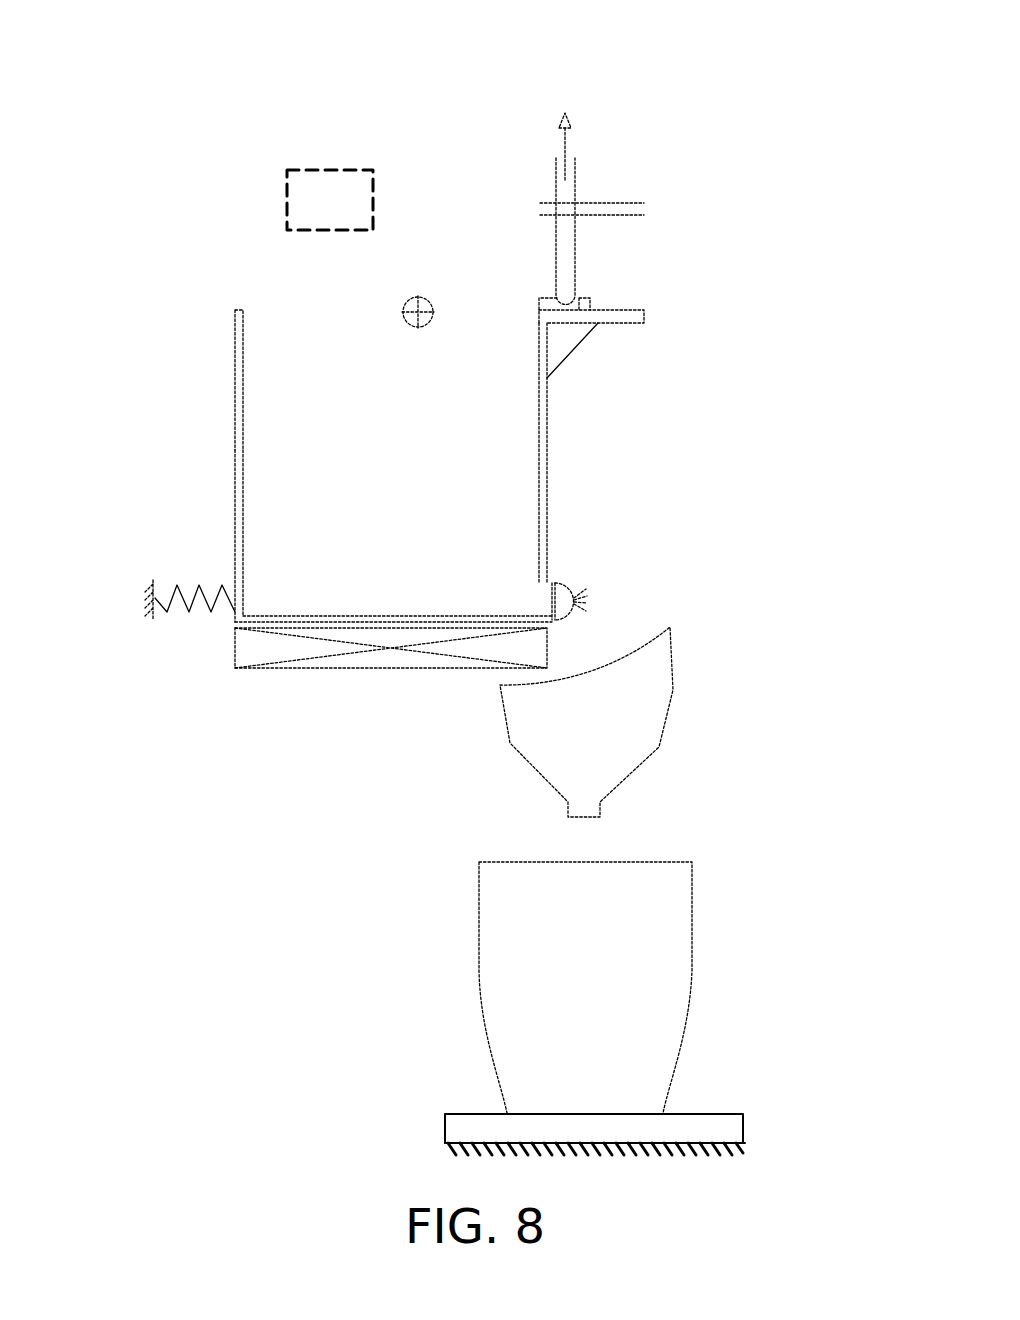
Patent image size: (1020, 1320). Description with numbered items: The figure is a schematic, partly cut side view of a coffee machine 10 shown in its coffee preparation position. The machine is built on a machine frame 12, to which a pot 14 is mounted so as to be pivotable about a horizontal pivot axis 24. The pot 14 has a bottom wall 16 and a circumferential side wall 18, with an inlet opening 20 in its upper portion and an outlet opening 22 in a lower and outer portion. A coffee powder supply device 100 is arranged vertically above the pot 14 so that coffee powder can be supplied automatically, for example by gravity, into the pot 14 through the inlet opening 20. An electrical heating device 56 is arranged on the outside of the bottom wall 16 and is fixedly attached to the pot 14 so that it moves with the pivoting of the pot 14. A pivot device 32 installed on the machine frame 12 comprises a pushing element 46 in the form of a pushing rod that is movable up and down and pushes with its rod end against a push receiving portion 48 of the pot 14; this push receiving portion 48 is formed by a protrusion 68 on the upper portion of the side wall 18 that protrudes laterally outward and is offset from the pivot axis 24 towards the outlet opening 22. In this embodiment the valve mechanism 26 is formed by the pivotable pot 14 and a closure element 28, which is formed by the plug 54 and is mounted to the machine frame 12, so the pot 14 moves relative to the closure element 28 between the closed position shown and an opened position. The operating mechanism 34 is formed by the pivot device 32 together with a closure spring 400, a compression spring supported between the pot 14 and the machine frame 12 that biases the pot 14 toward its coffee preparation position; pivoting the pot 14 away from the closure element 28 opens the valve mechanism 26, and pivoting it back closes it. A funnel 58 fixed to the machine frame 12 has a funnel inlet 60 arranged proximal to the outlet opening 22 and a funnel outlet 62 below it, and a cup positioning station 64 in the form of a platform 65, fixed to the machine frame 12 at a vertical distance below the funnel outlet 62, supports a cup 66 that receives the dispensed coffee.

The coffee machine 10 is at (320, 75).
The coffee powder supply device 100 is at (297, 211).
The inlet opening 20 is at (318, 317).
The pot 14 is at (233, 315).
The circumferential side wall 18 is at (236, 445).
The bottom wall 16 is at (235, 622).
The horizontal pivot axis 24 is at (415, 326).
The push receiving portion 48 is at (558, 308).
The protrusion 68 is at (575, 318).
The pushing element 46 is at (565, 258).
The pivot device 32 is at (592, 172).
The operating mechanism 34 is at (211, 568).
The machine frame 12 is at (543, 210).
The closure spring 400 is at (177, 580).
The electrical heating device 56 is at (245, 645).
The outlet opening 22 is at (548, 610).
The plug 54 is at (548, 592).
The valve mechanism 26 is at (558, 570).
The closure element 28 is at (573, 585).
The funnel 58 is at (660, 703).
The funnel inlet 60 is at (595, 672).
The funnel outlet 62 is at (588, 808).
The cup 66 is at (495, 968).
The cup positioning station 64 is at (437, 1118).
The platform 65 is at (711, 1120).